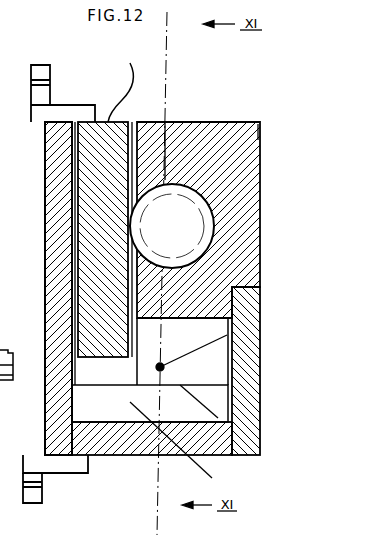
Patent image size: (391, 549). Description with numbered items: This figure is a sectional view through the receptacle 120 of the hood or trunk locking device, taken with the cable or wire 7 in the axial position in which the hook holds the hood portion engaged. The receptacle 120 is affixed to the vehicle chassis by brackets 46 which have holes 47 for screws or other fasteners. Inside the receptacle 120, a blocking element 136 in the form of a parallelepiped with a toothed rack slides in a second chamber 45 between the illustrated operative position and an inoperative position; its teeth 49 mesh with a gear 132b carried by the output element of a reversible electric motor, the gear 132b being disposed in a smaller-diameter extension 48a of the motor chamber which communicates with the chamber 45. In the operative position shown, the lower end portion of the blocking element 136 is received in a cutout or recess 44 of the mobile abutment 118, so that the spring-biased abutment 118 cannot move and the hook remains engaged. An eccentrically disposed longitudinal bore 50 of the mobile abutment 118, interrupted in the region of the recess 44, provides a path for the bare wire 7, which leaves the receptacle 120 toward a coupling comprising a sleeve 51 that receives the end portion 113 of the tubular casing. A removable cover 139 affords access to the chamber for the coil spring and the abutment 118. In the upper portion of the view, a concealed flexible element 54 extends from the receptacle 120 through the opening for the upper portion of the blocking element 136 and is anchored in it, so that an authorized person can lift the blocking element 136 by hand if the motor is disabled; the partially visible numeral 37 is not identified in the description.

The cable or wire 7 is at (258, 456).
The lever 37 is at (7, 286).
The cutout or recess 44 is at (152, 456).
The second compartment or chamber 45 is at (75, 205).
The brackets 46 is at (42, 100).
The holes 47 is at (33, 84).
The smaller-diameter extension 48a is at (240, 122).
The teeth of the rack 49 is at (190, 122).
The passage or bore 50 is at (160, 367).
The sleeve 51 is at (6, 315).
The flexible element 54 is at (108, 118).
The end portion 113 is at (11, 351).
The mobile abutment 118 is at (253, 312).
The receptacle 120 is at (293, 183).
The gear 132b is at (272, 130).
The blocking element 136 is at (102, 166).
The cover 139 is at (246, 350).